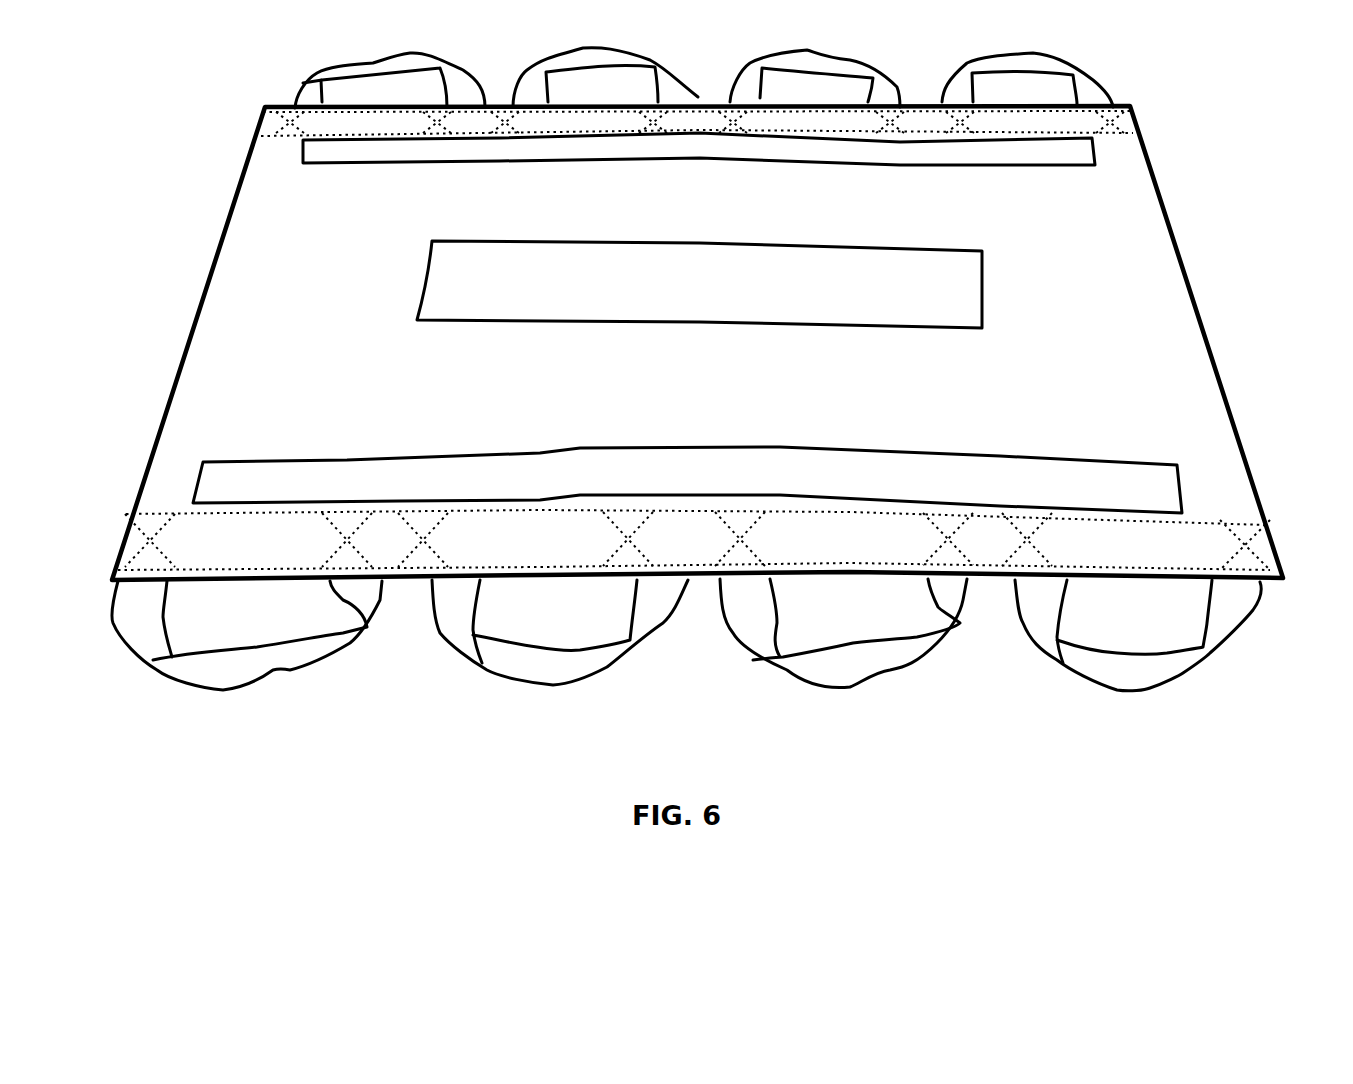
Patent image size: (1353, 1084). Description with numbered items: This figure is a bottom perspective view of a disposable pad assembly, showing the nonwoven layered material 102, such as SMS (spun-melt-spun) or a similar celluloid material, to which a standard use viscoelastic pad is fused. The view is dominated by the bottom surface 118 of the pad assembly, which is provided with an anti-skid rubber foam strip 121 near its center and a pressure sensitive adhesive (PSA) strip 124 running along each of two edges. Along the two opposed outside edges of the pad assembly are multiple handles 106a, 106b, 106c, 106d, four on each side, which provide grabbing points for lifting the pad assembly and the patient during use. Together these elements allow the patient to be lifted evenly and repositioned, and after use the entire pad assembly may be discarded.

The nonwoven layered material 102 is at (701, 411).
The bottom surface 118 is at (312, 383).
The anti-skid rubber foam strip 121 is at (707, 286).
The pressure sensitive adhesive strip 124 is at (1060, 152).
The handle 106a is at (212, 676).
The handle 106b is at (530, 660).
The handle 106c is at (832, 672).
The handle 106d is at (1137, 672).